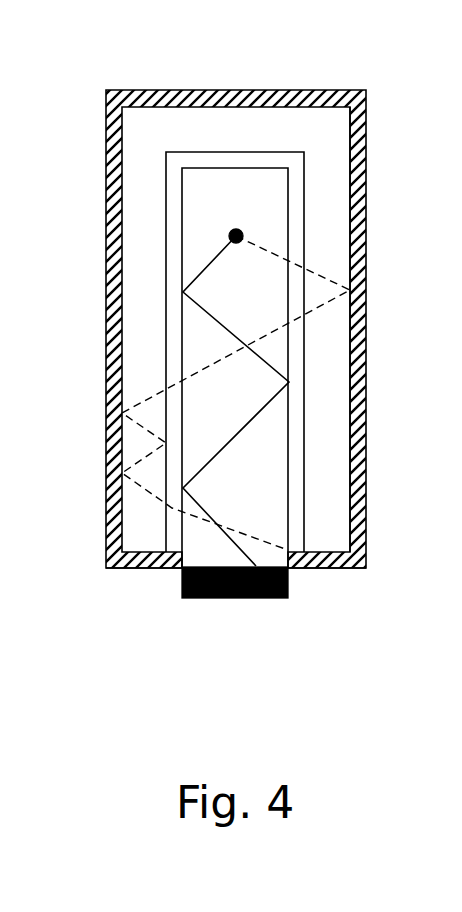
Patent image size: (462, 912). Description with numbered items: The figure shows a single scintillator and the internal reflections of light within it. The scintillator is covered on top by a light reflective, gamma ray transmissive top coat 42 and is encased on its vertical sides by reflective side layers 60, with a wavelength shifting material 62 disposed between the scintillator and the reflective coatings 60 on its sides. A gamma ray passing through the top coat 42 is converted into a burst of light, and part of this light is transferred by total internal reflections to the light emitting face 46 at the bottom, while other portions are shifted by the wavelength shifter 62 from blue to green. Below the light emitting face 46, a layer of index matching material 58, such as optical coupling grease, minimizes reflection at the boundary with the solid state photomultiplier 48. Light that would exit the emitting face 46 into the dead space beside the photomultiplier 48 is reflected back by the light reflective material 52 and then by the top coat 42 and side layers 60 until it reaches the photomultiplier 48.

The top coat 42 is at (243, 90).
The reflective layer 60 is at (357, 200).
The wavelength shifting material 62 is at (305, 322).
The light emitting face 46 is at (197, 550).
The index matching material 58 is at (272, 550).
The light reflective material 52 is at (320, 568).
The solid state photomultiplier 48 is at (212, 598).